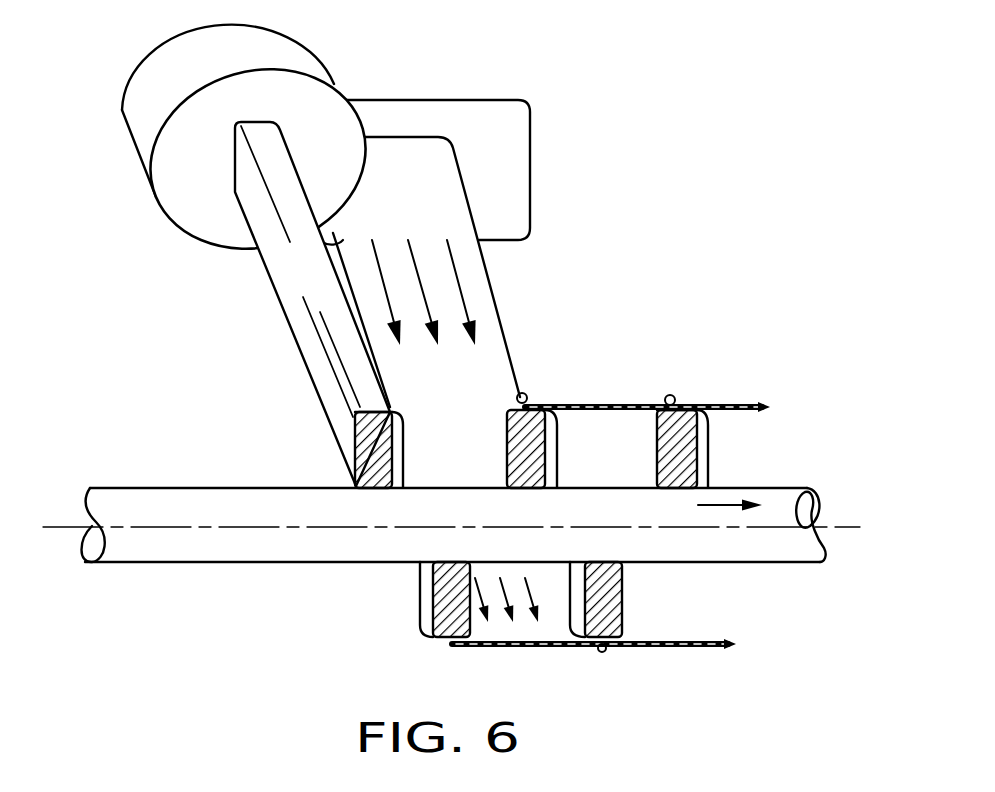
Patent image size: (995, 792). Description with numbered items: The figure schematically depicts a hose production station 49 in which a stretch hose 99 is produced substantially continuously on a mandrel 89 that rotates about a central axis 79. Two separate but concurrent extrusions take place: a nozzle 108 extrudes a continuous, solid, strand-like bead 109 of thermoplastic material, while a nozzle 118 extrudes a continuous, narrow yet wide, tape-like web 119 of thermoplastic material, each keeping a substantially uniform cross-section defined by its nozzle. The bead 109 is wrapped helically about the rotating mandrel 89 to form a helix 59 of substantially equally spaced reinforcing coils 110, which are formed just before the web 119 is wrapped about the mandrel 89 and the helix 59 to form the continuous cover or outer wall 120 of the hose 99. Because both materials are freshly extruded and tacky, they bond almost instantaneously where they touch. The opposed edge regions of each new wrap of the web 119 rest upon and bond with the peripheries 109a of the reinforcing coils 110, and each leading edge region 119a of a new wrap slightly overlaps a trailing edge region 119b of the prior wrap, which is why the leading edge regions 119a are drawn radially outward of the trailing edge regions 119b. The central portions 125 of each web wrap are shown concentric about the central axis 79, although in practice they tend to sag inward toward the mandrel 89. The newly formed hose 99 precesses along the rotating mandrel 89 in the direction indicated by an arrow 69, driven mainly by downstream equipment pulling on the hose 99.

The hose production station 49 is at (671, 146).
The helix 59 is at (413, 625).
The arrow 69 is at (718, 505).
The central axis 79 is at (65, 539).
The mandrel 89 is at (150, 488).
The stretch hose 99 is at (771, 373).
The nozzle 108 is at (176, 163).
The bead 109 is at (293, 302).
The outermost peripheral regions 109a is at (365, 408).
The reinforcing coils 110 is at (507, 438).
The nozzle 118 is at (518, 155).
The web 119 is at (483, 313).
The leading edge region 119a is at (672, 394).
The trailing edge region 119b is at (520, 392).
The outer wall 120 is at (740, 408).
The central portions 125 is at (577, 403).